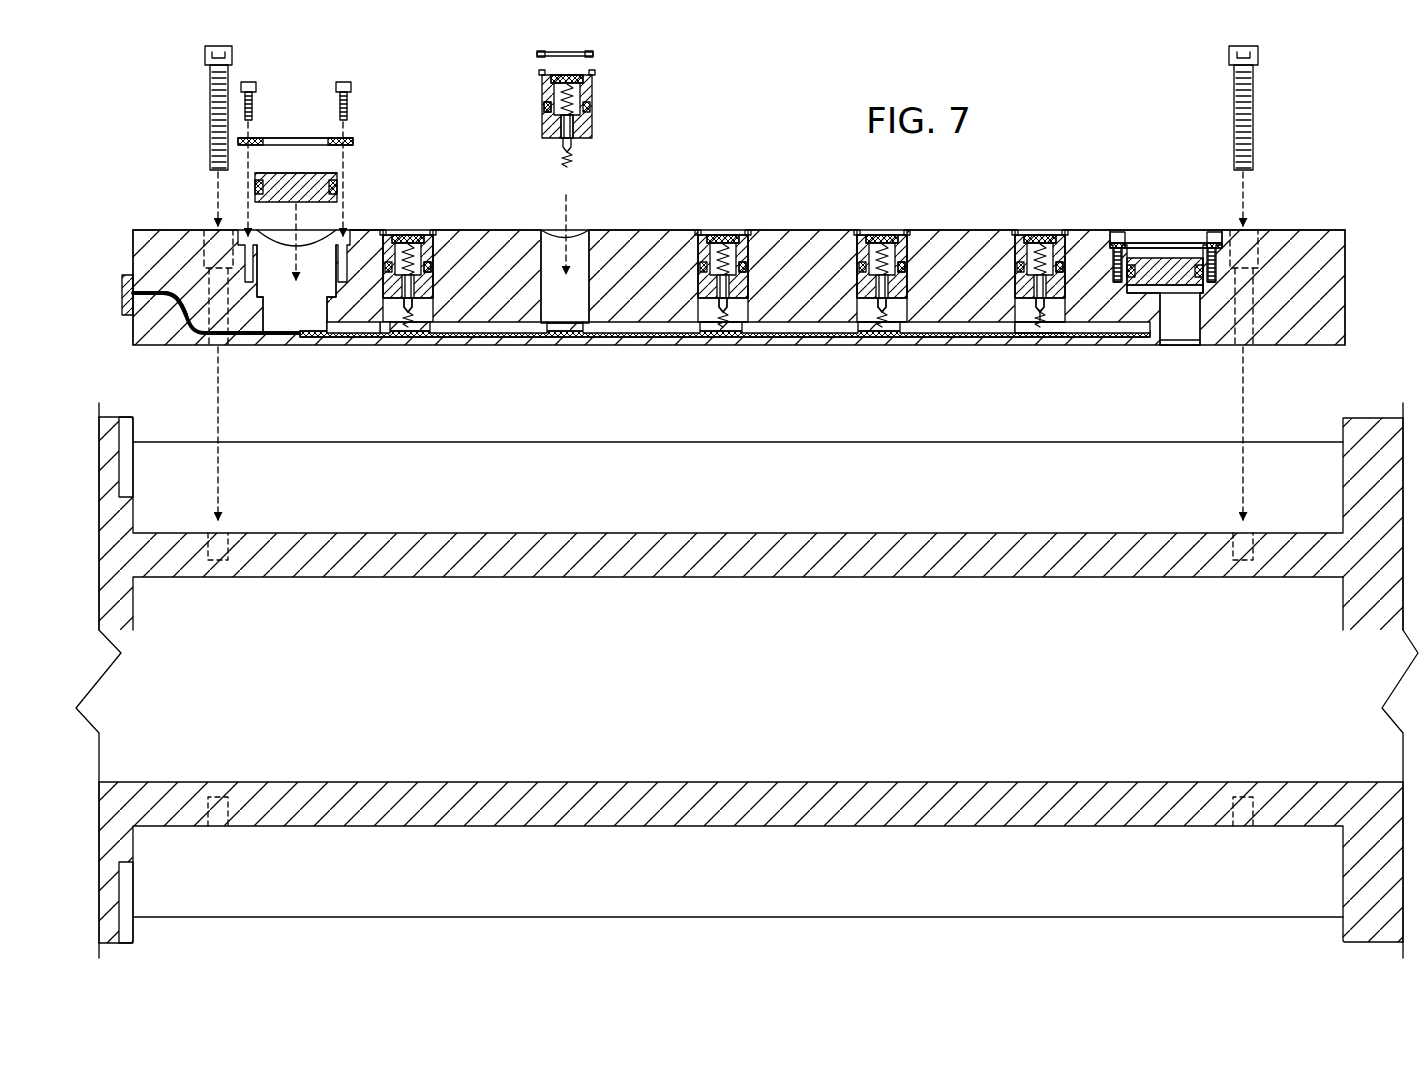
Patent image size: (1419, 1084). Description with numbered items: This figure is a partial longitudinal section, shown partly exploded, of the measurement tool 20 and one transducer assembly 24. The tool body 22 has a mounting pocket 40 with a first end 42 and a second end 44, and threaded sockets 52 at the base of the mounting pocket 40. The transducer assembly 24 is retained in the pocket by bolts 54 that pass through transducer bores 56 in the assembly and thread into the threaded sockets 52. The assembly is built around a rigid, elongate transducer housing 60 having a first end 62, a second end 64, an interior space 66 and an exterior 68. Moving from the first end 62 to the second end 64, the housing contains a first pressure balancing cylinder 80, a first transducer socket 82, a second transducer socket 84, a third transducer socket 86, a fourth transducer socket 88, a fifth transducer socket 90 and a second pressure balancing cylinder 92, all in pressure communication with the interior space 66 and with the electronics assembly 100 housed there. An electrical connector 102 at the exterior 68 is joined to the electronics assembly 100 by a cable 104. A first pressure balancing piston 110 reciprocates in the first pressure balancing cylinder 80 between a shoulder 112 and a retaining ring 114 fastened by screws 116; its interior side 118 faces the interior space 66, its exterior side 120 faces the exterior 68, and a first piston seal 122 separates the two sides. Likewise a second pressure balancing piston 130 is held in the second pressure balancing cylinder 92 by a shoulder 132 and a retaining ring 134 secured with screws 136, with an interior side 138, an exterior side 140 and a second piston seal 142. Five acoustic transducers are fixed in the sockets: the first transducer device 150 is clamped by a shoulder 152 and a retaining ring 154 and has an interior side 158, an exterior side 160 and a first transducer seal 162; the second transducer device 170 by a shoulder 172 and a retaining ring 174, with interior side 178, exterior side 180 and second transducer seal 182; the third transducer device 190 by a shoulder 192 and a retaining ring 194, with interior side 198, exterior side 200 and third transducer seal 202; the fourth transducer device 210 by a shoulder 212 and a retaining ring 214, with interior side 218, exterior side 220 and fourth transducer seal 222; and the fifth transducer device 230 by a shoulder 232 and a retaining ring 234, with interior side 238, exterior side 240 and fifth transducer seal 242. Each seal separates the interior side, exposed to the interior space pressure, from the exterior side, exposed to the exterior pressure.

The measurement tool 20 is at (720, 163).
The tool body 22 is at (1372, 447).
The transducer assembly 24 is at (1025, 157).
The mounting pocket 40 is at (693, 508).
The first end 42 is at (134, 540).
The second end 44 is at (1345, 537).
The threaded socket 52 is at (223, 557).
The bolt 54 is at (207, 115).
The transducer bore 56 is at (205, 250).
The transducer housing 60 is at (1322, 268).
The first end 62 is at (133, 228).
The second end 64 is at (1342, 228).
The interior space 66 is at (325, 338).
The exterior 68 is at (807, 158).
The first pressure balancing cylinder 80 is at (300, 338).
The first transducer socket 82 is at (428, 340).
The second transducer socket 84 is at (568, 300).
The third transducer socket 86 is at (738, 320).
The fourth transducer socket 88 is at (890, 320).
The fifth transducer socket 90 is at (1046, 320).
The second pressure balancing cylinder 92 is at (1183, 338).
The electronics assembly 100 is at (498, 345).
The electrical connector 102 is at (123, 288).
The cable 104 is at (165, 303).
The first pressure balancing piston 110 is at (320, 183).
The shoulder 112 is at (252, 343).
The retaining ring 114 is at (356, 141).
The screw 116 is at (257, 84).
The interior side 118 is at (312, 213).
The exterior side 120 is at (313, 172).
The first piston seal 122 is at (338, 192).
The second pressure balancing piston 130 is at (1163, 270).
The shoulder 132 is at (1205, 291).
The retaining ring 134 is at (1197, 245).
The screw 136 is at (1212, 236).
The interior side 138 is at (1165, 330).
The exterior side 140 is at (1173, 250).
The second piston seal 142 is at (1212, 278).
The first transducer device 150 is at (445, 250).
The shoulder 152 is at (378, 338).
The retaining ring 154 is at (430, 230).
The interior side 158 is at (432, 305).
The exterior side 160 is at (418, 230).
The first transducer seal 162 is at (437, 252).
The second transducer device 170 is at (602, 102).
The shoulder 172 is at (508, 338).
The retaining ring 174 is at (535, 54).
The interior side 178 is at (583, 143).
The exterior side 180 is at (578, 77).
The second transducer seal 182 is at (541, 104).
The third transducer device 190 is at (762, 248).
The shoulder 192 is at (690, 338).
The retaining ring 194 is at (748, 228).
The interior side 198 is at (752, 303).
The exterior side 200 is at (733, 230).
The third transducer seal 202 is at (752, 252).
The fourth transducer device 210 is at (922, 250).
The shoulder 212 is at (848, 328).
The retaining ring 214 is at (905, 228).
The interior side 218 is at (912, 305).
The exterior side 220 is at (886, 230).
The fourth transducer seal 222 is at (912, 252).
The fifth transducer device 230 is at (1050, 225).
The shoulder 232 is at (1012, 325).
The retaining ring 234 is at (1062, 232).
The interior side 238 is at (1022, 340).
The exterior side 240 is at (1030, 230).
The fifth transducer seal 242 is at (1068, 257).